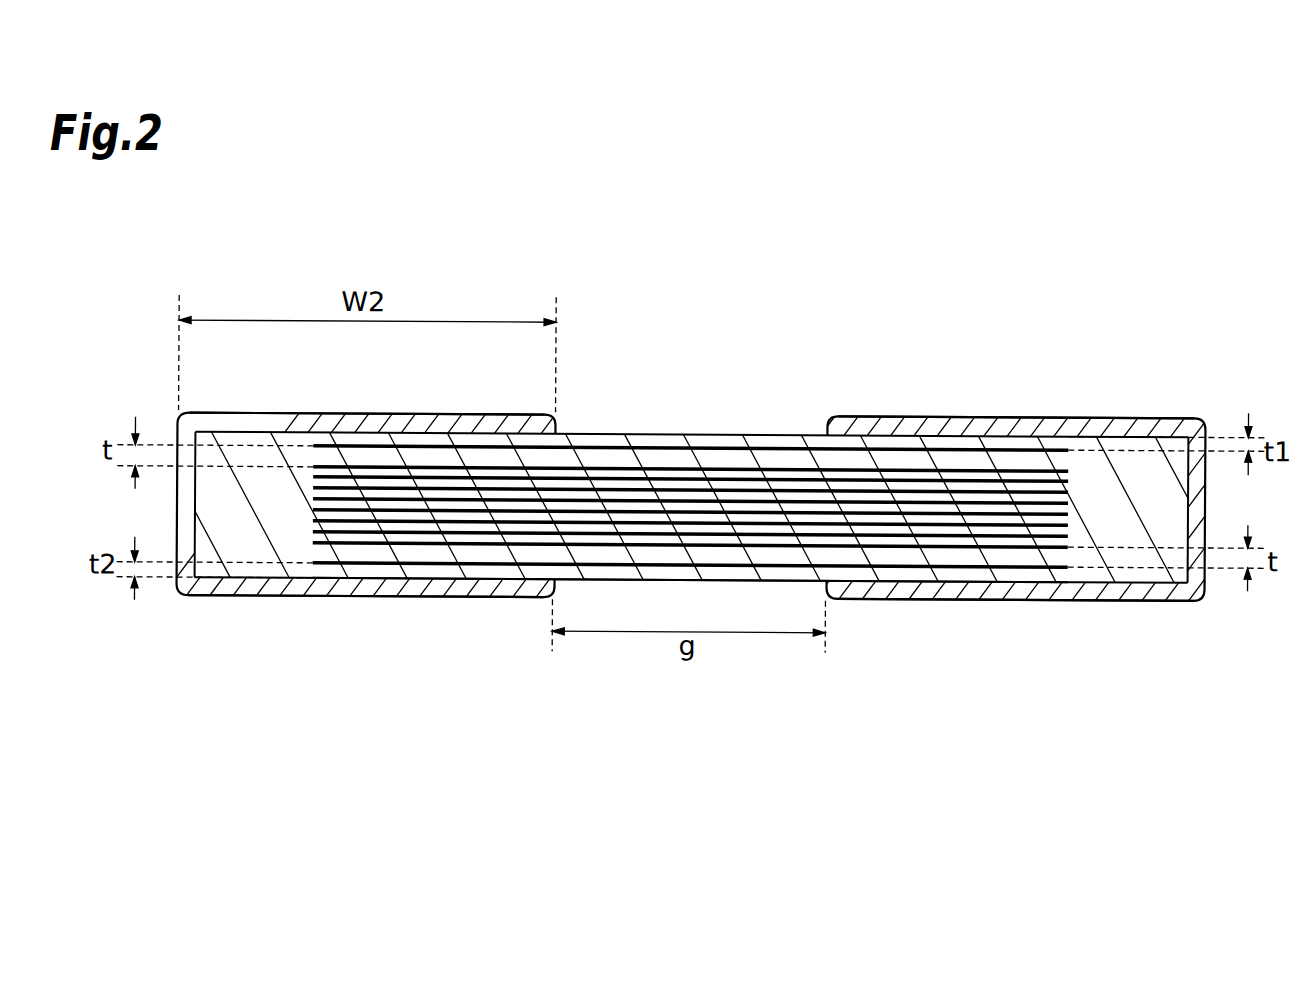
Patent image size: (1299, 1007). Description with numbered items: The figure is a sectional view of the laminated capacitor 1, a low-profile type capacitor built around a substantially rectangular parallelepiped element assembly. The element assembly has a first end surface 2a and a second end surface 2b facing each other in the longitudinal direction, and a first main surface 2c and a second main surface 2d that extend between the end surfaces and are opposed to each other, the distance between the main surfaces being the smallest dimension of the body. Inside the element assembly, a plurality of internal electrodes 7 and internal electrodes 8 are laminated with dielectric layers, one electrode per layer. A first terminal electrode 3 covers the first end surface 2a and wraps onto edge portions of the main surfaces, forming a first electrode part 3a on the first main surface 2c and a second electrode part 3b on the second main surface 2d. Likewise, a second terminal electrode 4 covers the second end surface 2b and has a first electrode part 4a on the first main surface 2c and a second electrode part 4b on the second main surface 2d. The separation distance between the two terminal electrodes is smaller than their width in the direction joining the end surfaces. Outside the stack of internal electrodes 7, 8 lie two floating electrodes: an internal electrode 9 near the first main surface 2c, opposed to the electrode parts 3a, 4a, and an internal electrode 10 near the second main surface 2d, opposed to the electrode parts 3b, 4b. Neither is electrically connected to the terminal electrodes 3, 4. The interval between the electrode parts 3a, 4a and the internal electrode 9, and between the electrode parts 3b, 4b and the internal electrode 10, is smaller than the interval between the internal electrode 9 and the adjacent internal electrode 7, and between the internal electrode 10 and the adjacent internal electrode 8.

The laminated capacitor 1 is at (1148, 310).
The first end surface 2a is at (187, 527).
The second end surface 2b is at (1187, 485).
The first main surface 2c is at (785, 432).
The second main surface 2d is at (897, 582).
The first terminal electrode 3 is at (323, 428).
The first electrode part 3a is at (433, 427).
The second electrode part 3b is at (418, 588).
The second terminal electrode 4 is at (1072, 427).
The first electrode part 4a is at (917, 427).
The second electrode part 4b is at (1035, 592).
The internal electrode 7 is at (1030, 490).
The internal electrode 8 is at (382, 523).
The internal electrode 9 is at (650, 443).
The internal electrode 10 is at (512, 567).